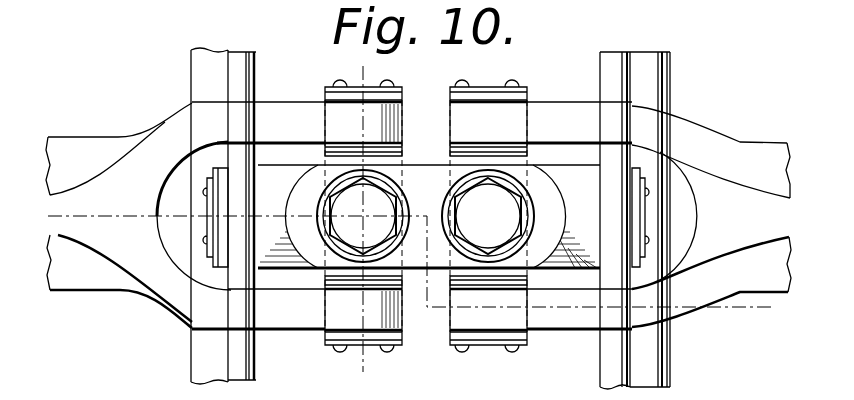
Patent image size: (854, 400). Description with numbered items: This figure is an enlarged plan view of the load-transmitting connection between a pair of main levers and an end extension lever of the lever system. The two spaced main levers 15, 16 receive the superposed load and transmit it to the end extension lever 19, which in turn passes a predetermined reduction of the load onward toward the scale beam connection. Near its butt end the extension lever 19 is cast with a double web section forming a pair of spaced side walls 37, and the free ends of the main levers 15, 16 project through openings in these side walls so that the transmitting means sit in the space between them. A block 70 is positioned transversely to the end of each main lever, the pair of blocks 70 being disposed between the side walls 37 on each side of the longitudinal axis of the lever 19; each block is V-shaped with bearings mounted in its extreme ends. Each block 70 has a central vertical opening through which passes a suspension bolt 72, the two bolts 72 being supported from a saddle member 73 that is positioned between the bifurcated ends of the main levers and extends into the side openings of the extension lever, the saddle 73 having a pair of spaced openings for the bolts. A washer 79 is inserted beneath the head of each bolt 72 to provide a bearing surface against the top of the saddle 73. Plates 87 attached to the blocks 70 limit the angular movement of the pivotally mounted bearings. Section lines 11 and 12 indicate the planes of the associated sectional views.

The section line 11- 11 is at (411, 260).
The section line 12- 12 is at (360, 224).
The main lever 15 is at (138, 215).
The main lever 16 is at (754, 152).
The end extension lever 19 is at (672, 88).
The side wall 37 is at (207, 80).
The block 70 is at (468, 163).
The suspension bolt 72 is at (470, 218).
The saddle member 73 is at (424, 216).
The washer 79 is at (340, 185).
The plate 87 is at (208, 207).